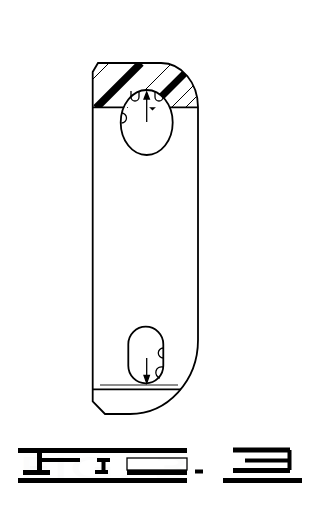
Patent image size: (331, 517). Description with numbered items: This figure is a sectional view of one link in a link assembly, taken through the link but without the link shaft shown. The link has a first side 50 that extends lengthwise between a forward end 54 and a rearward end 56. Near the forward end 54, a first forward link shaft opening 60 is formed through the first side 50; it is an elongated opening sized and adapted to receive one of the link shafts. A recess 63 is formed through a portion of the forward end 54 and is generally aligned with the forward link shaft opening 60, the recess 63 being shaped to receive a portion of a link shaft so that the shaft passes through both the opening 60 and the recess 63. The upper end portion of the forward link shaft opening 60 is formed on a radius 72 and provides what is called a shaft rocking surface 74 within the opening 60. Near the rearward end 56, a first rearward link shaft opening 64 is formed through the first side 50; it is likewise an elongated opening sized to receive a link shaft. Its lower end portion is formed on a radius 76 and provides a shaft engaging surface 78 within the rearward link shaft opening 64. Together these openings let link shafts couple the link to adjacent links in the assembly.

The first side 50 is at (175, 242).
The forward end 54 is at (143, 64).
The rearward end 56 is at (128, 414).
The first forward link shaft opening 60 is at (122, 120).
The recess 63 is at (175, 97).
The first rearward link shaft opening 64 is at (163, 347).
The radius 72 is at (147, 122).
The shaft rocking surface 74 is at (128, 66).
The radius 76 is at (145, 360).
The shaft engaging surface 78 is at (162, 370).